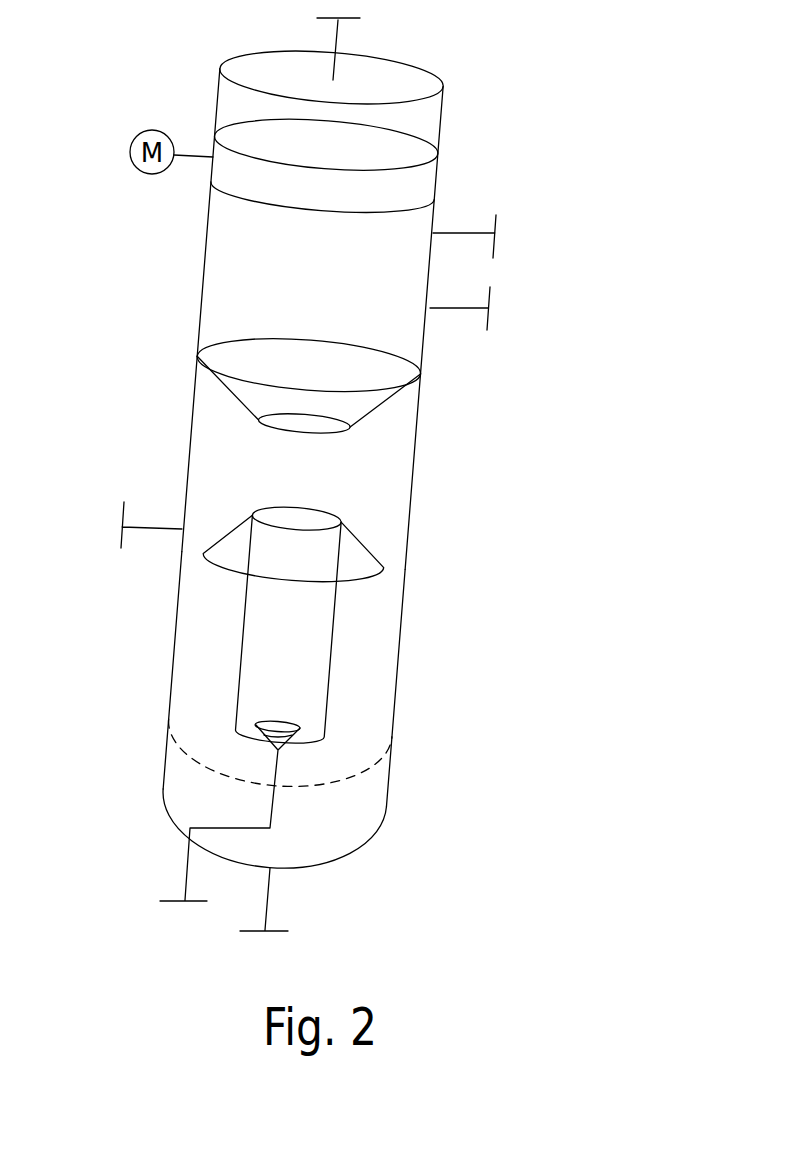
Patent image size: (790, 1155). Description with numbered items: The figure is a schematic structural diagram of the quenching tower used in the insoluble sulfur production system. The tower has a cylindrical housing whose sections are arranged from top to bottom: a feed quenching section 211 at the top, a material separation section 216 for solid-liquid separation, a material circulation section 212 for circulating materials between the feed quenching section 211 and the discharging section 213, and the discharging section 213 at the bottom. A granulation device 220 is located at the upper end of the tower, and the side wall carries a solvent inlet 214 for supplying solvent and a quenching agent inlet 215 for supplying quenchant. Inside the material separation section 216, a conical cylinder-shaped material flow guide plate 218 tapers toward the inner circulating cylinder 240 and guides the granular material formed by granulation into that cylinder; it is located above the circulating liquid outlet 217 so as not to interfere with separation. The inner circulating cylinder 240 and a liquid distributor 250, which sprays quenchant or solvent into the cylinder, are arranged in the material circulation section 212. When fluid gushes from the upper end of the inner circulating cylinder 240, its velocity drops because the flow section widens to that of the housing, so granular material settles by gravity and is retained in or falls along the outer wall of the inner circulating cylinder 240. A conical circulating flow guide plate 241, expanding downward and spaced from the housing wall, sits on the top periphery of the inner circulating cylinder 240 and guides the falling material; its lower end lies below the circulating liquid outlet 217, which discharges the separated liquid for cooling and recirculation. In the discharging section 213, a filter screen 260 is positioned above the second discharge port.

The feed quenching section 211 is at (225, 283).
The material circulation section 212 is at (197, 690).
The discharging section 213 is at (178, 807).
The solvent inlet 214 is at (433, 232).
The quenching agent inlet 215 is at (430, 308).
The material separation section 216 is at (212, 458).
The circulating liquid outlet 217 is at (182, 530).
The material flow guide plate 218 is at (258, 358).
The granulation device 220 is at (380, 152).
The inner circulating cylinder 240 is at (327, 690).
The circulating flow guide plate 241 is at (363, 540).
The liquid distributor 250 is at (282, 748).
The filter screen 260 is at (350, 770).